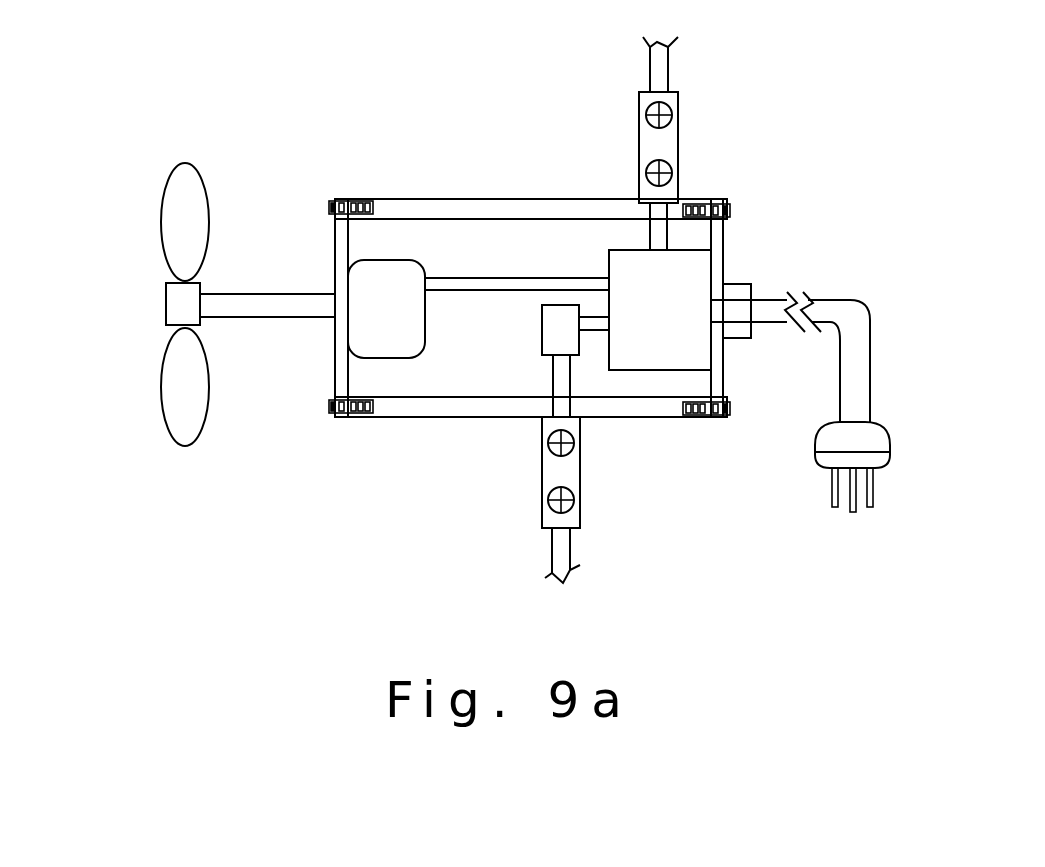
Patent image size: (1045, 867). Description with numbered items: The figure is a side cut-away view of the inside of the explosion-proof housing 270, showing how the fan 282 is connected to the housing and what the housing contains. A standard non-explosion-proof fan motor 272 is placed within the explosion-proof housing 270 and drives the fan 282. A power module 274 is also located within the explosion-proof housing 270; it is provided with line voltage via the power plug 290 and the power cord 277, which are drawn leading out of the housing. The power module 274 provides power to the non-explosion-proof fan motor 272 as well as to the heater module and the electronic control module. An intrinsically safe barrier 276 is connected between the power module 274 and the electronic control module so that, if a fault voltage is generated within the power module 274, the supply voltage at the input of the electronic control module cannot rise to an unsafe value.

The explosion-proof housing 270 is at (405, 418).
The non-explosion-proof fan motor 272 is at (390, 260).
The power module 274 is at (630, 248).
The intrinsically safe barrier 276 is at (542, 335).
The power cord 277 is at (832, 300).
The fan 282 is at (162, 387).
The power plug 290 is at (818, 463).